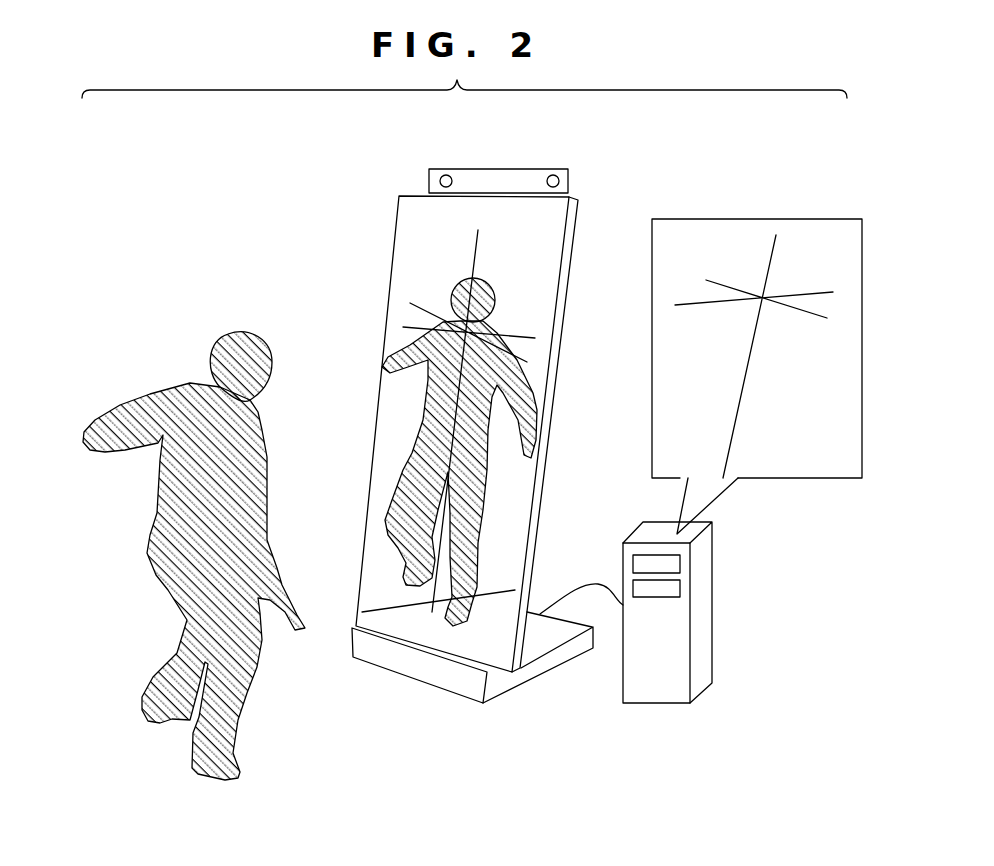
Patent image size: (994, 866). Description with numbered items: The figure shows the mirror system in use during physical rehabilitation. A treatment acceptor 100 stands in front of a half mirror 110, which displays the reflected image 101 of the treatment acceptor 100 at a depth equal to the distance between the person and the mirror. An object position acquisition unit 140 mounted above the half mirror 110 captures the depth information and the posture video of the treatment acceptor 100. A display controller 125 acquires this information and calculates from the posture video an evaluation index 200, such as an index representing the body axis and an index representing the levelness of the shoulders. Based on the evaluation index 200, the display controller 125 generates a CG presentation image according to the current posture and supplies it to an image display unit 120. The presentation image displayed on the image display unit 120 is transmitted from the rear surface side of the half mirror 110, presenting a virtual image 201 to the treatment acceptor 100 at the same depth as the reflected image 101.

The treatment acceptor 100 is at (213, 352).
The reflected image 101 is at (490, 283).
The half mirror 110 is at (405, 233).
The image display unit 120 is at (540, 665).
The display controller 125 is at (672, 703).
The object position acquisition unit 140 is at (520, 169).
The evaluation index 200 is at (713, 282).
The virtual image 201 is at (418, 305).